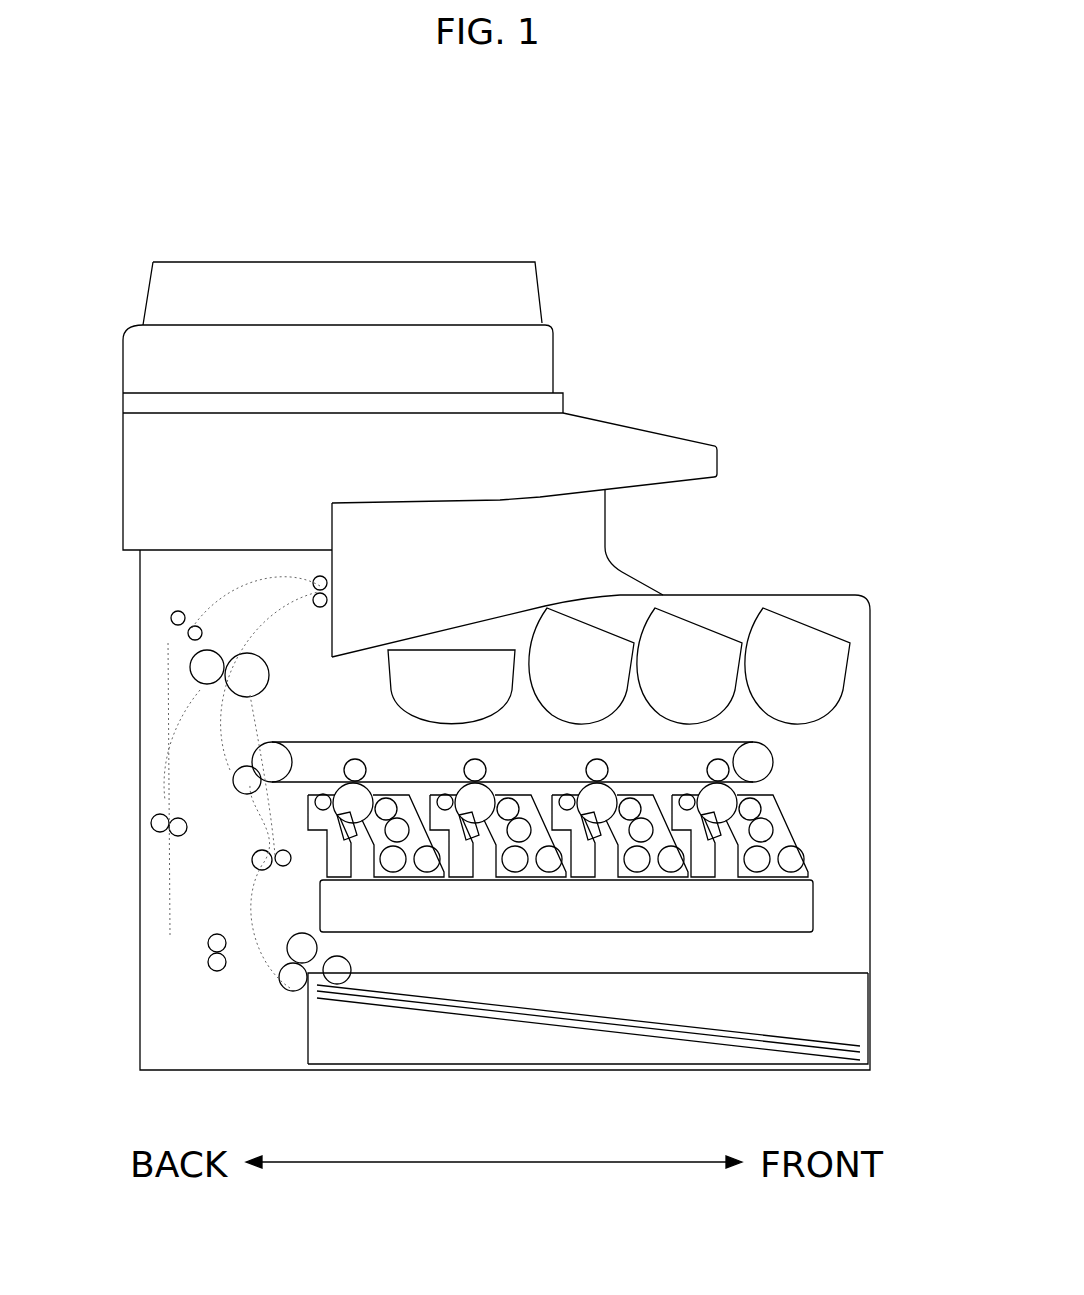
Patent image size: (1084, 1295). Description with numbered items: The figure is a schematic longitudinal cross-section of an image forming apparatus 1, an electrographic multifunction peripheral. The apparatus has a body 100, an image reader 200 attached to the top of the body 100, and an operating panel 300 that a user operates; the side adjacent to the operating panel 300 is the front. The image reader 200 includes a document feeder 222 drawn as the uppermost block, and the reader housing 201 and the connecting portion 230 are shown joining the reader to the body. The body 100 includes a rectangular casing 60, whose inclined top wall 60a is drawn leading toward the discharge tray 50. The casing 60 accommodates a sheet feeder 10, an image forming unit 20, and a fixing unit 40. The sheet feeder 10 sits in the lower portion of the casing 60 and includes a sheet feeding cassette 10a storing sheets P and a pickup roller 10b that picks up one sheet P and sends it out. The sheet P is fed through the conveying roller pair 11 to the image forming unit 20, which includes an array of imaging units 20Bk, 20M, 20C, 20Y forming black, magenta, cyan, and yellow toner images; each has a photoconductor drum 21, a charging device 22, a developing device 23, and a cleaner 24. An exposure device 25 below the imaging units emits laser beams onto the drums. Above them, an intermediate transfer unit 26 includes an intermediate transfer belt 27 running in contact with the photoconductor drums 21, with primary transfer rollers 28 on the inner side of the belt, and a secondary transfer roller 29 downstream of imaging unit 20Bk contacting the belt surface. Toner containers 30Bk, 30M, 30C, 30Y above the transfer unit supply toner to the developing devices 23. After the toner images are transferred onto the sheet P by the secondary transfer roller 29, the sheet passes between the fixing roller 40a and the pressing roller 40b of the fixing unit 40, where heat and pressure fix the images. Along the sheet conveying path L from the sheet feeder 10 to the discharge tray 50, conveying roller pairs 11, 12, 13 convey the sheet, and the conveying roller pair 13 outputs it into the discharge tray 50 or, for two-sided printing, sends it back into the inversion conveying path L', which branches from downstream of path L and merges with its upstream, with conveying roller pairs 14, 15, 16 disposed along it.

The image forming apparatus 1 is at (147, 220).
The image reader 200 is at (118, 300).
The scanner body 201 is at (122, 500).
The document feeder 222 is at (560, 358).
The connection portion 230 is at (567, 405).
The operating panel 300 is at (665, 432).
The body 100 is at (872, 862).
The casing 60 is at (872, 683).
The inclined portion of cover 60a is at (724, 605).
The discharge tray 50 is at (820, 590).
The toner container 30Bk is at (451, 687).
The toner container 30M is at (581, 666).
The toner container 30C is at (689, 666).
The toner container 30Y is at (797, 666).
The cleaner 24 is at (512, 723).
The intermediate transfer unit 26 is at (332, 738).
The intermediate transfer belt 27 is at (378, 740).
The primary transfer rollers 28 is at (723, 758).
The image forming unit 20 is at (812, 774).
The imaging unit 20Bk is at (359, 852).
The imaging unit 20M is at (498, 856).
The imaging unit 20C is at (620, 856).
The imaging unit 20Y is at (764, 833).
The photoconductor drum 21 is at (757, 779).
The charging device 22 is at (740, 863).
The developing device 23 is at (764, 827).
The exposure device 25 is at (662, 933).
The fixing unit 40 is at (252, 665).
The fixing roller 40a is at (260, 700).
The pressing roller 40b is at (199, 703).
The conveying roller pair 13 is at (313, 592).
The conveying roller pair 14 is at (190, 632).
The conveying roller pair 15 is at (160, 835).
The secondary transfer roller 29 is at (235, 815).
The conveying roller pair 12 is at (262, 871).
The conveying roller pair 16 is at (210, 955).
The conveying roller pair 11 is at (280, 975).
The sheet feeder 10 is at (818, 965).
The sheet feeding cassette 10a is at (870, 1028).
The pickup roller 10b is at (350, 964).
The sheet P is at (681, 1040).
The sheet conveying path L is at (244, 782).
The inversion conveying path L' is at (142, 745).